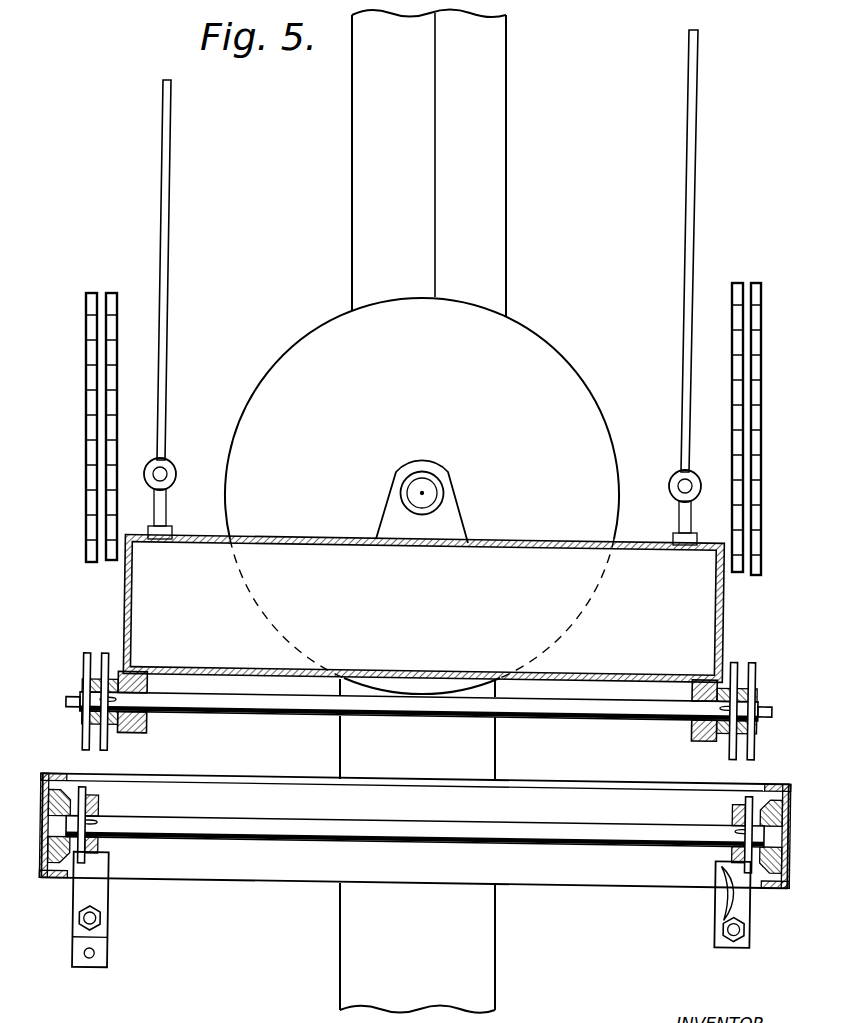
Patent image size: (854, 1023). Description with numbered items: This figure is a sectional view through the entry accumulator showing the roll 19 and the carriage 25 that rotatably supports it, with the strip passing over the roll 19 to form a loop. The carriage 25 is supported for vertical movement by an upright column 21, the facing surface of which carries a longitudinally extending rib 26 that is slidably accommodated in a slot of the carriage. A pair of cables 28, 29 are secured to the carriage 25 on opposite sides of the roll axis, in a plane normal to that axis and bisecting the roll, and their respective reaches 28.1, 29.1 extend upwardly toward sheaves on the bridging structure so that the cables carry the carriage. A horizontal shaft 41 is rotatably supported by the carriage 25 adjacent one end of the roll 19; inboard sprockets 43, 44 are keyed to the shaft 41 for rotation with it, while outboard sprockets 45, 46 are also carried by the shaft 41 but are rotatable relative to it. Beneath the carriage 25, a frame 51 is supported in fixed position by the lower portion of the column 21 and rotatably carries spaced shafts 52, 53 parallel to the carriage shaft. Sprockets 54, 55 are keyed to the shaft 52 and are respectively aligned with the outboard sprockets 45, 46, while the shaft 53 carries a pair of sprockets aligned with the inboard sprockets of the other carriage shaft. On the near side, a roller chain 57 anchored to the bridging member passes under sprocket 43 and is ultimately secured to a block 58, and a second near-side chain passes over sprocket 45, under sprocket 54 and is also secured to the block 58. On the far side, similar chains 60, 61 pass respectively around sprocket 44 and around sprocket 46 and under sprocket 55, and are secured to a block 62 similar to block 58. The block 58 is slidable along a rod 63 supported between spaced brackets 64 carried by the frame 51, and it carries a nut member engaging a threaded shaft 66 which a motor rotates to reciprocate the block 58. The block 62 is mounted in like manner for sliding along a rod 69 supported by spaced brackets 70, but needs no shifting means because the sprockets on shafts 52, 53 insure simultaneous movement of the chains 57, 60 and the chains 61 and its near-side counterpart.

The roll 19 is at (297, 346).
The column 21 is at (352, 193).
The carriage 25 is at (123, 599).
The rib 26 is at (435, 128).
The cable 28 is at (156, 221).
The cable reach 28.1 is at (163, 183).
The cable 29 is at (694, 265).
The cable reach 29.1 is at (690, 186).
The horizontal shaft 41 is at (261, 707).
The inboard sprocket 43 is at (112, 721).
The inboard sprocket 44 is at (716, 737).
The outboard sprocket 45 is at (82, 741).
The outboard sprocket 46 is at (757, 745).
The frame 51 is at (560, 868).
The shaft 52 is at (283, 828).
The shaft 53 is at (85, 298).
The sprocket 54 is at (100, 808).
The sprocket 55 is at (733, 820).
The roller chain 57 is at (118, 294).
The block 58 is at (100, 951).
The chain 60 is at (732, 299).
The chain 61 is at (762, 322).
The block 62 is at (722, 896).
The rod 63 is at (82, 921).
The bracket 64 is at (100, 893).
The threaded shaft 66 is at (91, 964).
The rod 69 is at (755, 931).
The bracket 70 is at (752, 906).